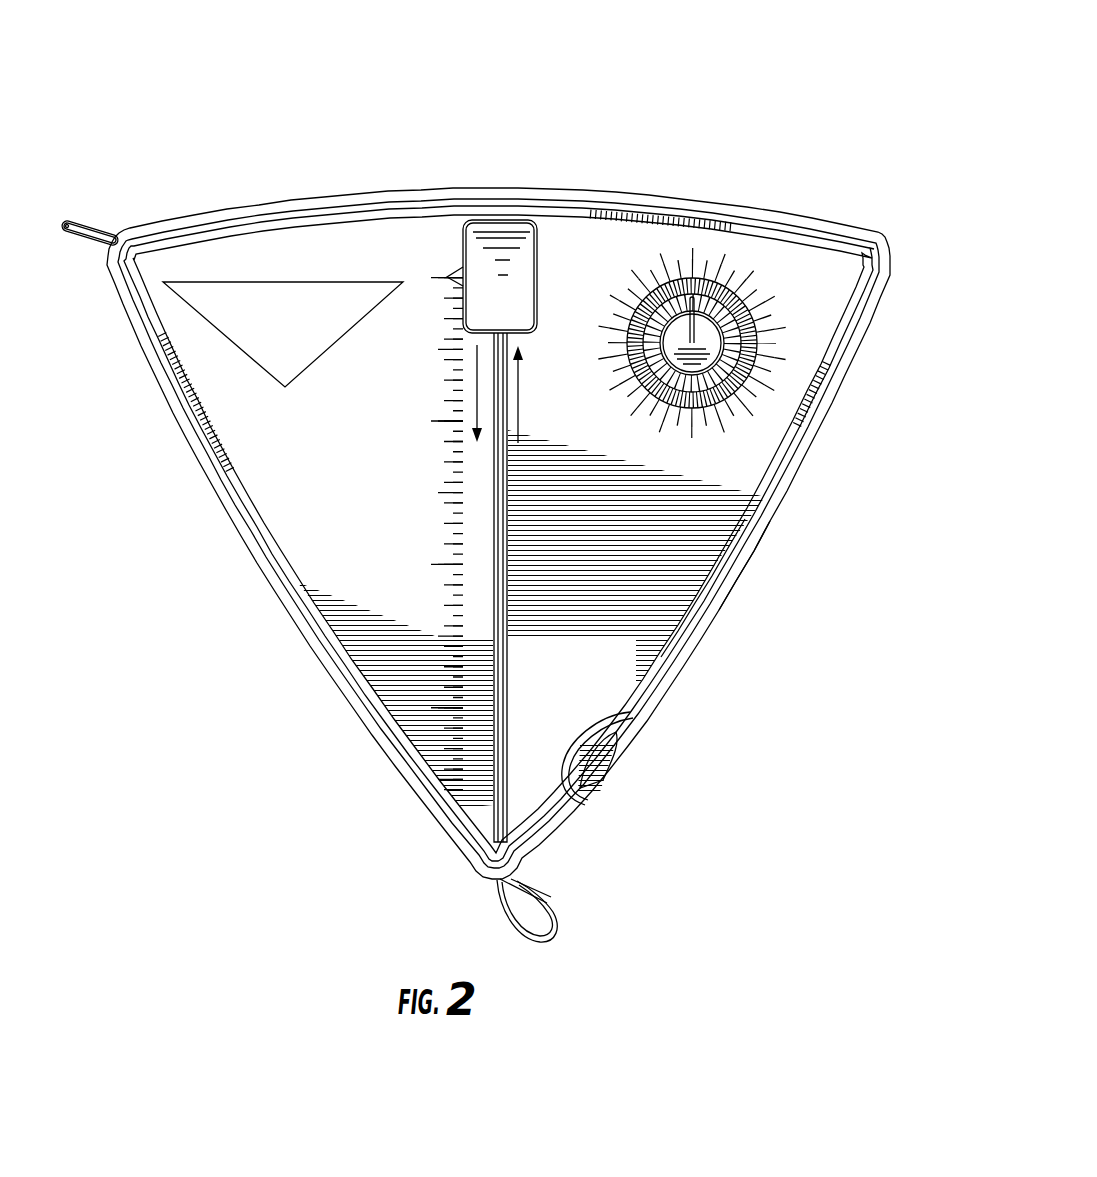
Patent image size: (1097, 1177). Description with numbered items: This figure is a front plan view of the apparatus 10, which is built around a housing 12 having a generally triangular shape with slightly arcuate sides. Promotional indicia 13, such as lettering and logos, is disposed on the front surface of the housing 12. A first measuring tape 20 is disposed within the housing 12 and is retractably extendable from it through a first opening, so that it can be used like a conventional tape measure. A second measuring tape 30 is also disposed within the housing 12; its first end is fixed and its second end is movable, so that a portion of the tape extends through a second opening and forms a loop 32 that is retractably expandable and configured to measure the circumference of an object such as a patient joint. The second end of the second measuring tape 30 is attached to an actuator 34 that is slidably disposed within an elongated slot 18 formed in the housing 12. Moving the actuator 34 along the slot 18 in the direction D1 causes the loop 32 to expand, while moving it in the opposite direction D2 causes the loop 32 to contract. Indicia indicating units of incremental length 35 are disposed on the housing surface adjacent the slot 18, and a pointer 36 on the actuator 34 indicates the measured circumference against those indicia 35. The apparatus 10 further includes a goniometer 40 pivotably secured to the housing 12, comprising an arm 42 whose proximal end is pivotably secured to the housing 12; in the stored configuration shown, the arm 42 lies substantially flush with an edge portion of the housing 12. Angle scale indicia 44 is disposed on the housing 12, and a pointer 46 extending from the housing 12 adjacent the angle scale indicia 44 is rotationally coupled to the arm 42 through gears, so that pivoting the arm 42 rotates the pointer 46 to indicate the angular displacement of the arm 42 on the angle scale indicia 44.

The apparatus 10 is at (366, 100).
The housing 12 is at (622, 190).
The promotional indicia 13 is at (313, 282).
The elongated slot 18 is at (499, 576).
The first measuring tape 20 is at (84, 226).
The second measuring tape 30 is at (503, 531).
The loop 32 is at (533, 950).
The actuator 34 is at (478, 268).
The indicia indicating units of incremental length 35 is at (445, 488).
The pointer 36 is at (450, 271).
The goniometer 40 is at (752, 557).
The arm 42 is at (692, 652).
The angle scale indicia 44 is at (818, 318).
The pointer 46 is at (741, 300).
The direction D1 is at (477, 372).
The direction D2 is at (520, 410).